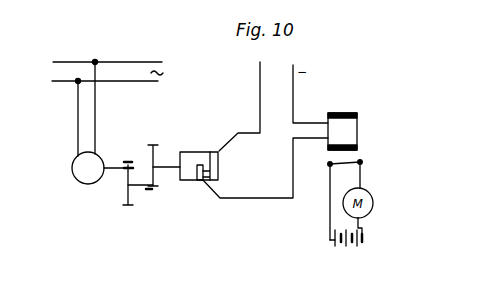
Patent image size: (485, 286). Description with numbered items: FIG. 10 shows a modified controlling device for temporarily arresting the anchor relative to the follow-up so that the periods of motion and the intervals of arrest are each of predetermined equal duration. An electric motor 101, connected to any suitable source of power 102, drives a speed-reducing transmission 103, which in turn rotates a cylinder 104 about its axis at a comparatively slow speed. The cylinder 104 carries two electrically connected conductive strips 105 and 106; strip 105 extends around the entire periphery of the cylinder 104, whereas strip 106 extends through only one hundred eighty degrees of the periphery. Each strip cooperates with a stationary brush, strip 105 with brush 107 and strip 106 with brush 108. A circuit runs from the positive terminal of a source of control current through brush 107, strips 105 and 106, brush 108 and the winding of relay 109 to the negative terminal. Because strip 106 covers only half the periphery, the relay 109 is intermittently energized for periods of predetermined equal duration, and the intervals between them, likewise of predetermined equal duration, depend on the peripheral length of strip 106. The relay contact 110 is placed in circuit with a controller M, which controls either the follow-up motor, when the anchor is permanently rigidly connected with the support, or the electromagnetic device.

The electric motor 101 is at (80, 185).
The source of power 102 is at (61, 69).
The speed-reducing transmission 103 is at (139, 152).
The cylinder 104 is at (196, 146).
The conductive strip 105 is at (218, 172).
The conductive strip 106 is at (200, 173).
The stationary brush 107 is at (213, 150).
The stationary brush 108 is at (209, 189).
The relay 109 is at (352, 140).
The relay contact 110 is at (356, 164).